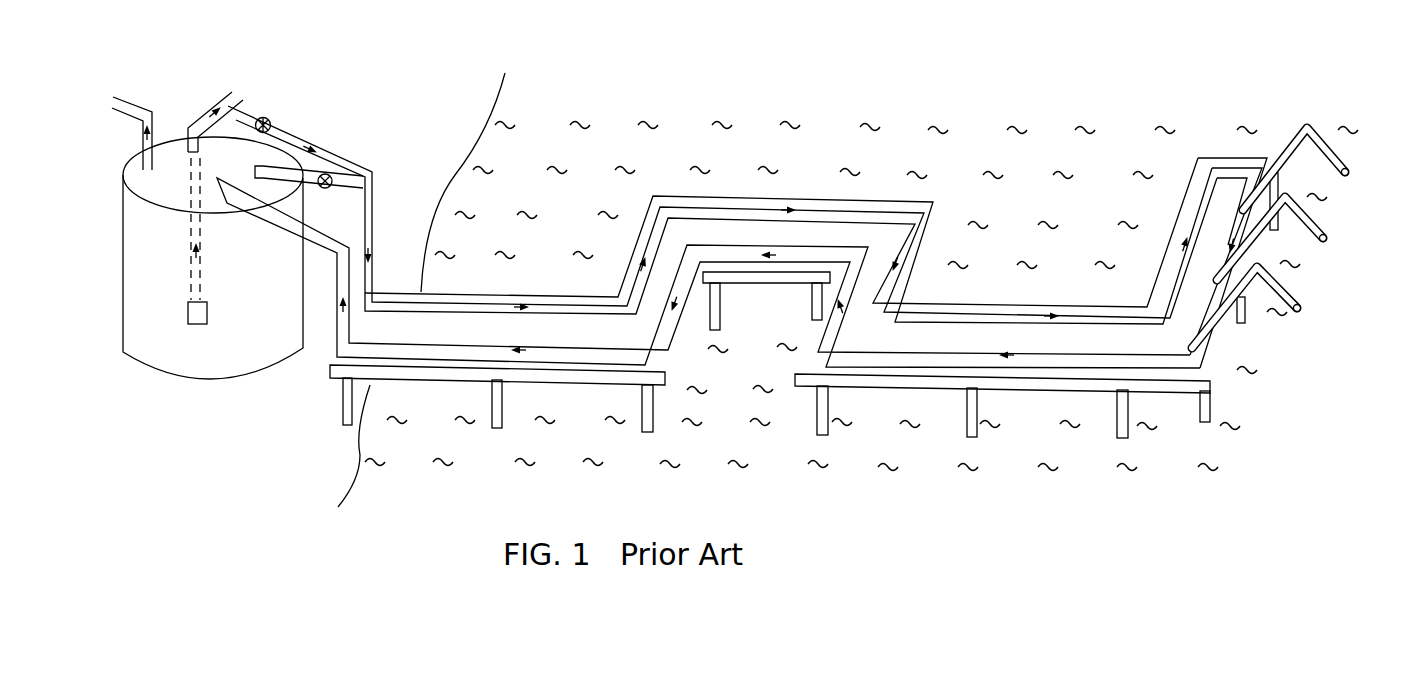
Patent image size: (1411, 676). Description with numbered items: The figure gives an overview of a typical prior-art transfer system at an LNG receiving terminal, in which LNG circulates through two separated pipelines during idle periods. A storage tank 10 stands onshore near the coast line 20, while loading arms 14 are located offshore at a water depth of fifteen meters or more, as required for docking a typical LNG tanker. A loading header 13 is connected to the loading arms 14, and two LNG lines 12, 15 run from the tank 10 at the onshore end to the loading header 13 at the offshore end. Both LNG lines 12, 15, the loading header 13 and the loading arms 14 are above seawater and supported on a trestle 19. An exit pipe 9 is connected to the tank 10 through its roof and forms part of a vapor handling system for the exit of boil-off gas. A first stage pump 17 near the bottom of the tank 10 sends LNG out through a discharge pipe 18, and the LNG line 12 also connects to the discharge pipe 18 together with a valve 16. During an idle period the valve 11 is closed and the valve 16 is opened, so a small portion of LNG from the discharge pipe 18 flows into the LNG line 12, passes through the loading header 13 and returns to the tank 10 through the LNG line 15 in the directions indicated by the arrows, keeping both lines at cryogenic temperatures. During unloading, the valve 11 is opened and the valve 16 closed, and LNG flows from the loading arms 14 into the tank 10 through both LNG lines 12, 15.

The exit pipe 9 is at (127, 117).
The storage tank 10 is at (203, 386).
The valve 11 is at (325, 189).
The LNG line 12 is at (345, 163).
The loading header 13 is at (1198, 307).
The loading arms 14 is at (1342, 148).
The LNG line 15 is at (437, 343).
The valve 16 is at (267, 119).
The first stage pump 17 is at (207, 313).
The discharge pipe 18 is at (213, 110).
The trestle 19 is at (507, 383).
The coast line 20 is at (848, 272).